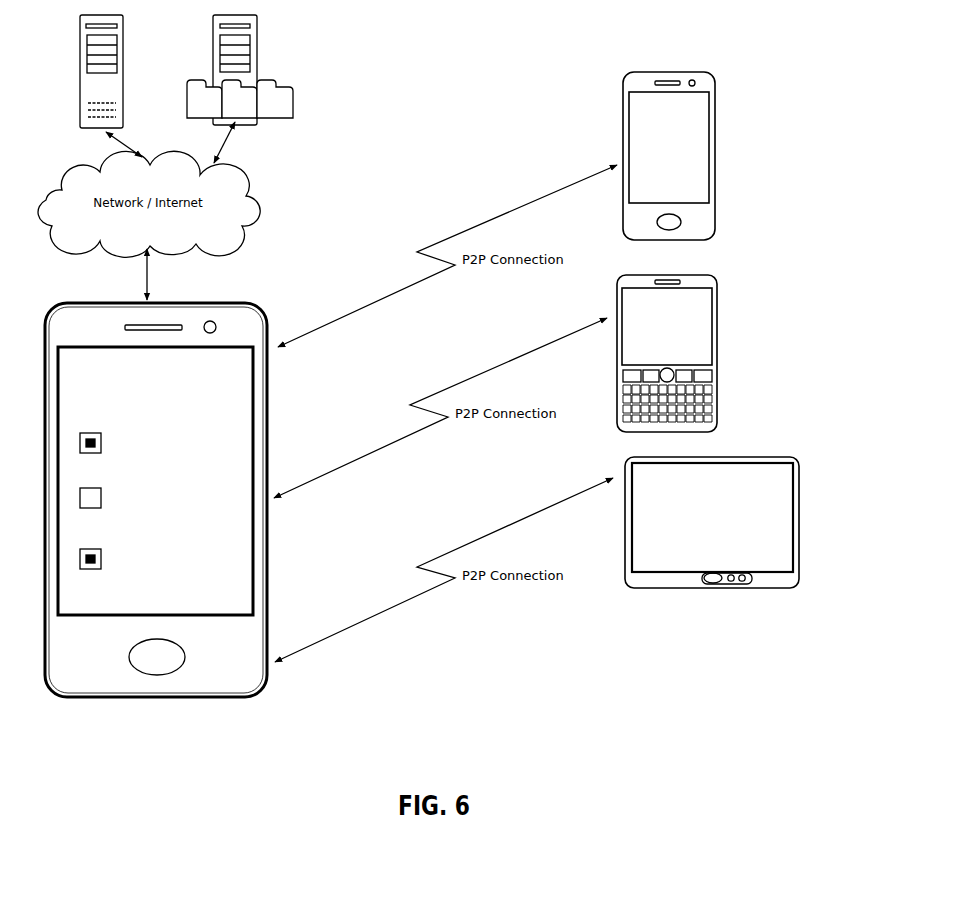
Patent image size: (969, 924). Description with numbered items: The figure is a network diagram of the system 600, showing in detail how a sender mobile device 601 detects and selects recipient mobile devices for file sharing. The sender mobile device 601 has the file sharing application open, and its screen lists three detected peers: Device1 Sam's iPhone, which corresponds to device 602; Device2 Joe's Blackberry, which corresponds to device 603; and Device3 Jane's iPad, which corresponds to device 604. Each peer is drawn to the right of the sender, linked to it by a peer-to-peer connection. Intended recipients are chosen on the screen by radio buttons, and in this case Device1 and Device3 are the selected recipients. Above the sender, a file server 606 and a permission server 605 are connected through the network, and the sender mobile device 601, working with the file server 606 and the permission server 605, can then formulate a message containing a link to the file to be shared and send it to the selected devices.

The system 600 is at (795, 55).
The sender mobile device 601 is at (224, 294).
The device 602 is at (719, 100).
The device 603 is at (723, 289).
The device 604 is at (769, 455).
The permission server 605 is at (125, 45).
The file server 606 is at (260, 38).